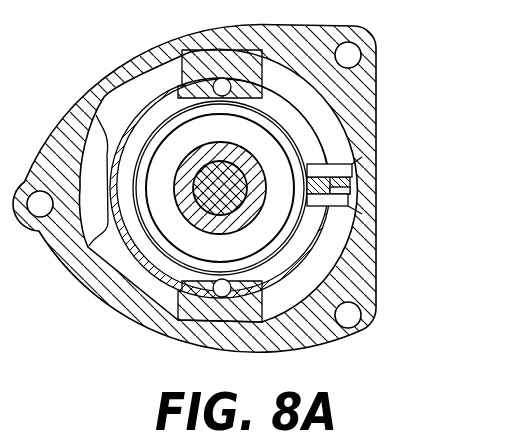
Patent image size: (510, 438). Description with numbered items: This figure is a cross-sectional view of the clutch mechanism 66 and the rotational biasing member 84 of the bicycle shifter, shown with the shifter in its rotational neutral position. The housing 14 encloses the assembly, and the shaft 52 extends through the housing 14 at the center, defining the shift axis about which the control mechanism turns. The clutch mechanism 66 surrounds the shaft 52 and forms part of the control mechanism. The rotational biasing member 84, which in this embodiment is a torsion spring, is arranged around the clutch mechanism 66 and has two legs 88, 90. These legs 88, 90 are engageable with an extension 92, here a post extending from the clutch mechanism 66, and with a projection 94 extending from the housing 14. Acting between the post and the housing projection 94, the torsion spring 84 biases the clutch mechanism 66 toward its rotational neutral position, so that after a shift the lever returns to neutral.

The housing 14 is at (377, 77).
The shaft 52 is at (210, 197).
The clutch mechanism 66 is at (139, 108).
The rotational biasing member 84 is at (287, 231).
The first leg 88 is at (353, 166).
The second leg 90 is at (333, 184).
The extension 92 is at (345, 203).
The projection 94 is at (348, 201).